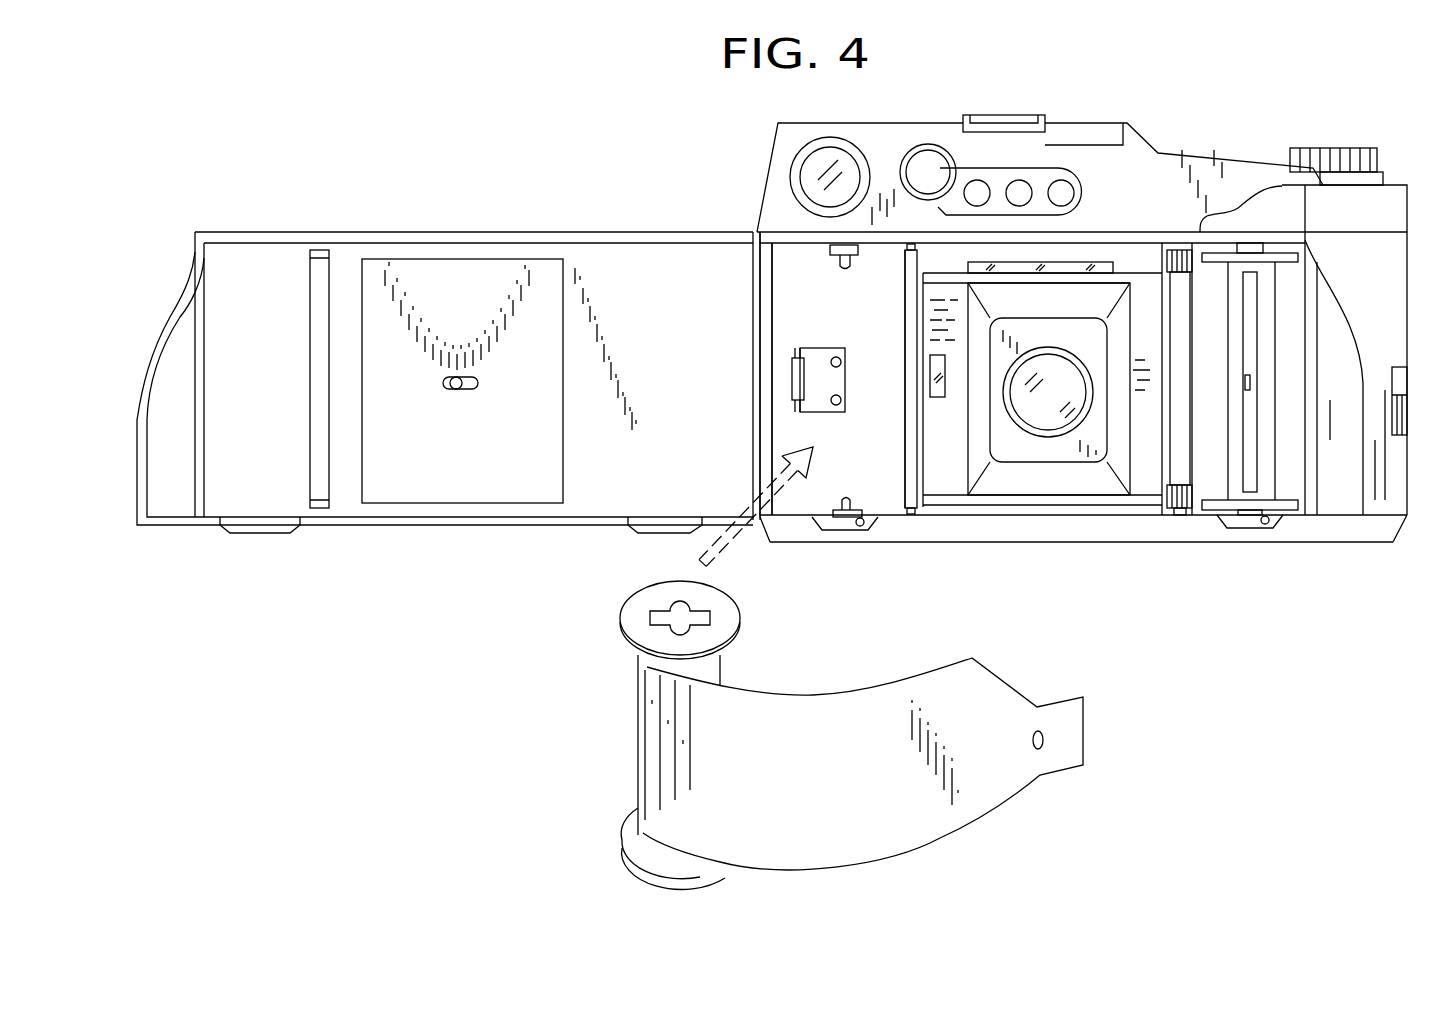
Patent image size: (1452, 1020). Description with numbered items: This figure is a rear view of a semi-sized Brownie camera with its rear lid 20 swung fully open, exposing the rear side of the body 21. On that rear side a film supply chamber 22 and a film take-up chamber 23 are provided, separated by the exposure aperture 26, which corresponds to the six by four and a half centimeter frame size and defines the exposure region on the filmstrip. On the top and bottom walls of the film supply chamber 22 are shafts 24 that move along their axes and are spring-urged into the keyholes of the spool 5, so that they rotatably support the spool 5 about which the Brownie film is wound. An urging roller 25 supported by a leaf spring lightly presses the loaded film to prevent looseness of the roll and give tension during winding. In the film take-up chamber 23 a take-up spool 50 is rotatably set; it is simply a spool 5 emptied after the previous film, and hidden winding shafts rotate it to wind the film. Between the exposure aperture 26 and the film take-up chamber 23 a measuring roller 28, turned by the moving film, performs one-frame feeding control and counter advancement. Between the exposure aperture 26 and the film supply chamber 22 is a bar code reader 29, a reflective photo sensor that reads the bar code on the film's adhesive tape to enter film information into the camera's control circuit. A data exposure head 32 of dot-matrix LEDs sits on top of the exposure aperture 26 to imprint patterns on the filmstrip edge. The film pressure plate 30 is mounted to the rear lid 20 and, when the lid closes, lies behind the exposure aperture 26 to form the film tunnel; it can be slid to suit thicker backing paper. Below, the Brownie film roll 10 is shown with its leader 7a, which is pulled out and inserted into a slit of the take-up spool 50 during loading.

The spool 5 is at (722, 614).
The leader 7a is at (993, 717).
The Brownie film roll 10 is at (842, 735).
The rear lid 20 is at (572, 527).
The body 21 is at (1175, 152).
The film supply chamber 22 is at (797, 292).
The film take-up chamber 23 is at (1297, 458).
The shafts 24 is at (848, 266).
The urging roller 25 is at (790, 364).
The exposure aperture 26 is at (990, 460).
The measuring roller 28 is at (1178, 456).
The sensor 29 is at (940, 397).
The film pressure plate 30 is at (565, 445).
The data exposure head 32 is at (1085, 258).
The take-up spool 50 is at (1295, 458).